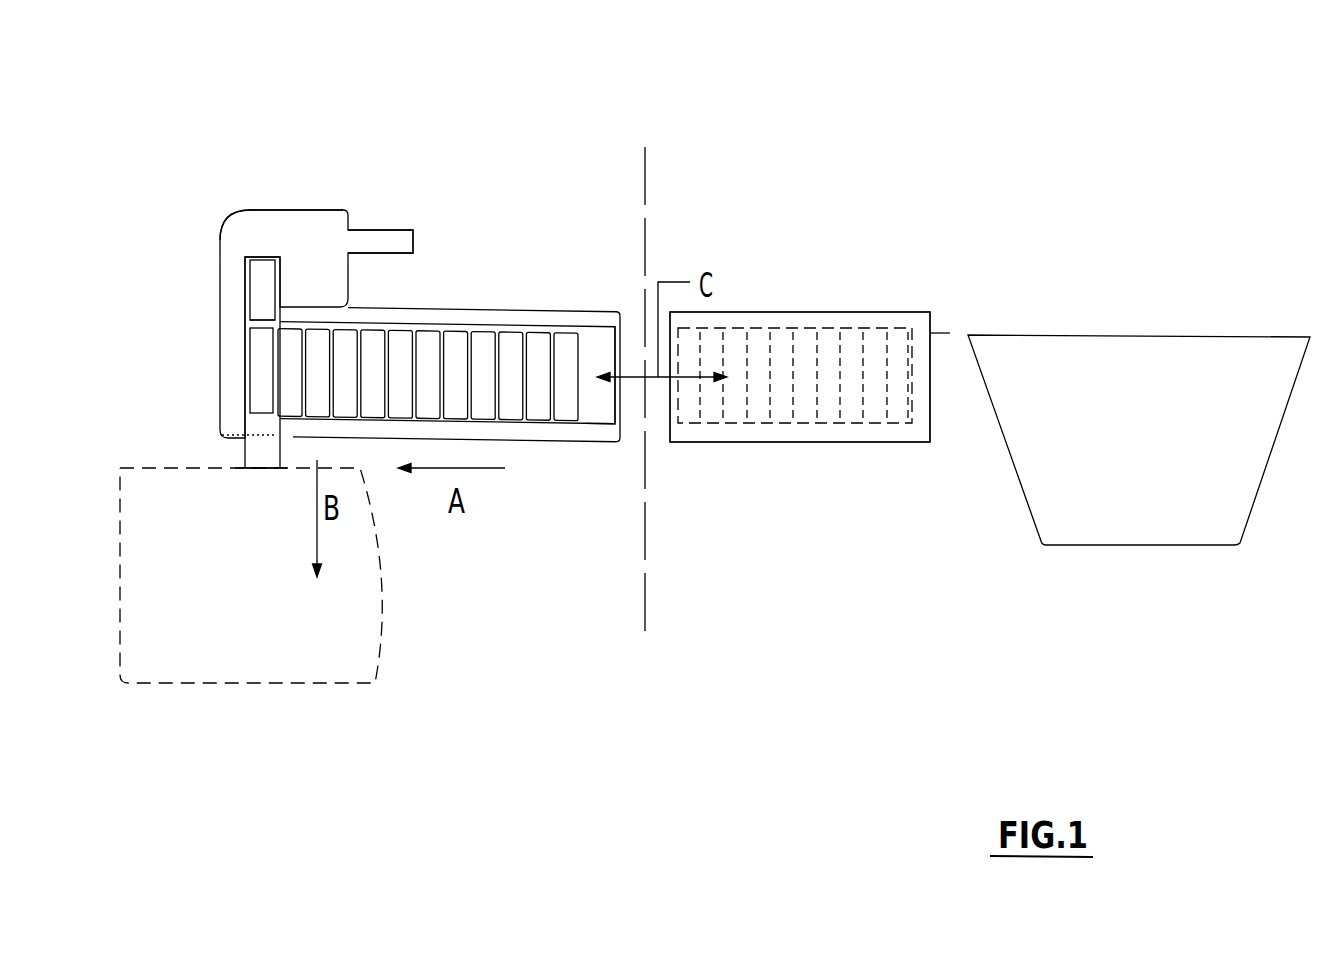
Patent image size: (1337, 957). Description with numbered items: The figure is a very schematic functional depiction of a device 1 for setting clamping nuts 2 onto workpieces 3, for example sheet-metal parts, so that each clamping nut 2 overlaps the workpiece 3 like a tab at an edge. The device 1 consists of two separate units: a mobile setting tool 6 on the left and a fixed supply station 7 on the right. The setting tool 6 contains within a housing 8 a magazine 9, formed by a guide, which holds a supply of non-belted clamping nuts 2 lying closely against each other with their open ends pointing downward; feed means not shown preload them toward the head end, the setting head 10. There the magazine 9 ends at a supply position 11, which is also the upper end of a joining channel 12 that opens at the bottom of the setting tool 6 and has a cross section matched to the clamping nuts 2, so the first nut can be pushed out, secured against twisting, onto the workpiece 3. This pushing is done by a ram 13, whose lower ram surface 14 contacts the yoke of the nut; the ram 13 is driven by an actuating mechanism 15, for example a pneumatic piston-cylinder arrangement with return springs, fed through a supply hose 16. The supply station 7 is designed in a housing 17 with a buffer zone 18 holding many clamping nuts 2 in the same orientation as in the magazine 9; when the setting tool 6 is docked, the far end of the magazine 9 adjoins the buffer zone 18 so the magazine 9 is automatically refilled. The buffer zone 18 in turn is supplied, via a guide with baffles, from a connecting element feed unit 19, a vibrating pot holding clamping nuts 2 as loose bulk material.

The device 1 is at (598, 746).
The clamping nuts 2 is at (402, 350).
The workpieces 3 is at (365, 608).
The mobile setting tool 6 is at (480, 177).
The supply station 7 is at (821, 182).
The housing 8 is at (512, 307).
The magazine 9 is at (598, 410).
The setting head 10 is at (199, 367).
The supply position 11 is at (229, 415).
The joining channel 12 is at (260, 453).
The ram 13 is at (258, 275).
The ram surface 14 is at (262, 318).
The actuating mechanism 15 is at (312, 238).
The supply hose 16 is at (400, 228).
The housing 17 is at (918, 312).
The buffer zone 18 is at (918, 398).
The connecting element feed unit 19 is at (1115, 365).